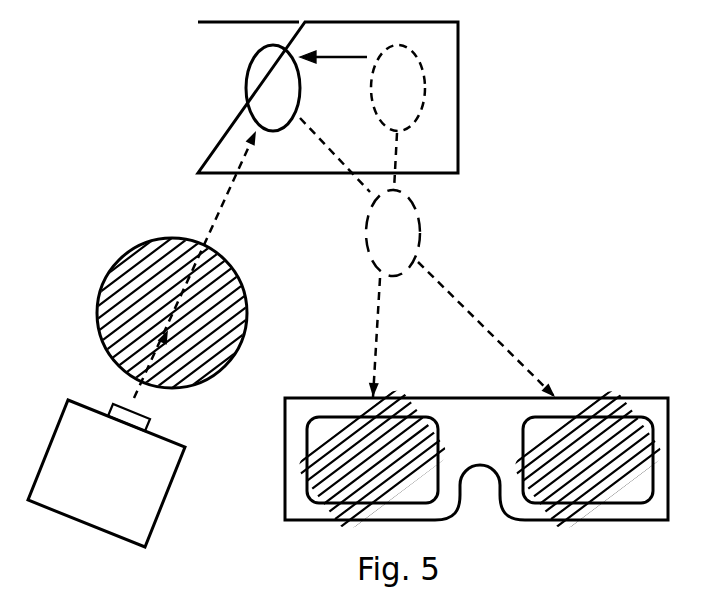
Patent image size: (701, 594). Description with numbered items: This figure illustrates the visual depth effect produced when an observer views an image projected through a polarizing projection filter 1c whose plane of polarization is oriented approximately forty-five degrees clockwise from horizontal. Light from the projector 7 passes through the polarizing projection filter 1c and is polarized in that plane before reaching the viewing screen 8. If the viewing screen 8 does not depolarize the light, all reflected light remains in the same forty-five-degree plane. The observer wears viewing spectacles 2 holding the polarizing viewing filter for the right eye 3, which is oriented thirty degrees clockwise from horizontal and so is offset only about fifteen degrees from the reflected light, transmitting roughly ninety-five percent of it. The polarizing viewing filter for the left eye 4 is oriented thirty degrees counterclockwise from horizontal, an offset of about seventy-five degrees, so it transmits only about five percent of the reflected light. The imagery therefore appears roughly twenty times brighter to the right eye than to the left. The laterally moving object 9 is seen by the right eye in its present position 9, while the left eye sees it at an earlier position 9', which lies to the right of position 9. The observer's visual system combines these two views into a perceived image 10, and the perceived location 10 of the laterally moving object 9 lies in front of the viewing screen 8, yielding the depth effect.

The polarizing projection filter 1c is at (142, 283).
The spectacles frame 2 is at (600, 403).
The polarizing viewing filter for the right eye 3 is at (610, 433).
The polarizing viewing filter for the left eye 4 is at (400, 435).
The projector 7 is at (68, 445).
The viewing screen 8 is at (440, 40).
The laterally moving object 9 is at (256, 98).
The position of the object seen by the left eye 9' is at (446, 118).
The perceived image 10 is at (400, 213).